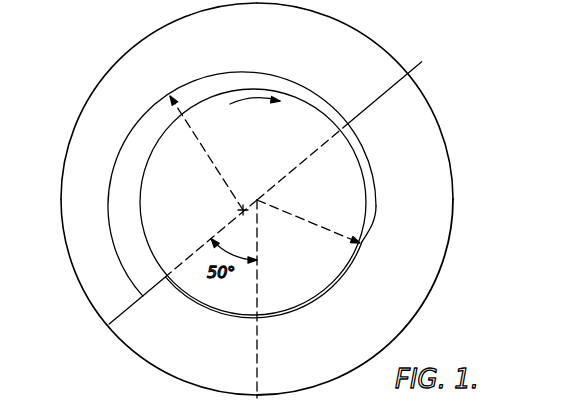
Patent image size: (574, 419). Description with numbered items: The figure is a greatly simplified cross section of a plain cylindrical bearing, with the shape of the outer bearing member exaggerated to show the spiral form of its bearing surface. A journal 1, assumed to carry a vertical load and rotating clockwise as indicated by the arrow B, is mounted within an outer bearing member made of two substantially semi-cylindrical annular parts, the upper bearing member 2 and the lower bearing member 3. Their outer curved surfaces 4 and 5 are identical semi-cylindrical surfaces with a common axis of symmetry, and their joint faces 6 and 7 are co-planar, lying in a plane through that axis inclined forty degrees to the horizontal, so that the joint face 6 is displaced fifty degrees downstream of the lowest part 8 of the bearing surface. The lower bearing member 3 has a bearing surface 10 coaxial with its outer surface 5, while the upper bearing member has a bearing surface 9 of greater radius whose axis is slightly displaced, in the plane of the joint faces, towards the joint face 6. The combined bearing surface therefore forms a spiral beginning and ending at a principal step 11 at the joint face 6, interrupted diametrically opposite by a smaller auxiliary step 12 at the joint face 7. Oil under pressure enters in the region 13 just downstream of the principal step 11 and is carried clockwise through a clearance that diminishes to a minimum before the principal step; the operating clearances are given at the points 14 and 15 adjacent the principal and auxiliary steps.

The journal 1 is at (195, 214).
The upper bearing member 2 is at (68, 209).
The lower bearing member 3 is at (438, 203).
The outer curved surface of upper bearing member 4 is at (107, 73).
The outer curved surface of lower bearing member 5 is at (425, 300).
The joint face 6 is at (109, 325).
The joint face 7 is at (400, 74).
The lowest part of the bearing surface 8 is at (258, 317).
The bearing surface of upper bearing member 9 is at (125, 140).
The bearing surface of lower bearing member 10 is at (352, 270).
The principal step 11 is at (158, 291).
The auxiliary step 12 is at (345, 122).
The region downstream of principal step 13 is at (141, 294).
The point adjacent the principal step 14 is at (169, 285).
The point adjacent the auxiliary step 15 is at (346, 126).
The arrow indicating direction of rotation B is at (255, 114).